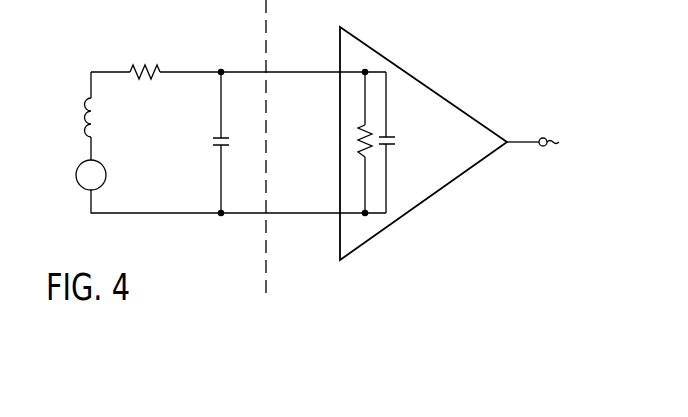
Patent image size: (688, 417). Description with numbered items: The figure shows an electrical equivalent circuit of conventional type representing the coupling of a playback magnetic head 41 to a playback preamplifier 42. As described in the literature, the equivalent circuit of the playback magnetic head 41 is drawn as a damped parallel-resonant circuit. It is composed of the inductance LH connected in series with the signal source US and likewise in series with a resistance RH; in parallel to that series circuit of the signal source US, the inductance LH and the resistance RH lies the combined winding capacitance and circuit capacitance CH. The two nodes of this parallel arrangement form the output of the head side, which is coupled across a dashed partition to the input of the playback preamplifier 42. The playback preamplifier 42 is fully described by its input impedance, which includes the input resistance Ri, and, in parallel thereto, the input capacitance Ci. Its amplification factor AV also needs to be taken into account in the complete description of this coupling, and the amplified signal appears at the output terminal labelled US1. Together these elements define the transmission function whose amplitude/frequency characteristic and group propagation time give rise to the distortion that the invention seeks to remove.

The playback magnetic head 41 is at (198, 207).
The playback preamplifier 42 is at (418, 193).
The resistance RH is at (145, 57).
The inductance LH is at (71, 117).
The signal source US is at (77, 176).
The combined winding capacitance and circuit capacitance CH is at (205, 140).
The input resistance Ri is at (357, 157).
The input capacitance Ci is at (397, 164).
The amplification factor AV is at (462, 142).
The amplifier output voltage US1 is at (569, 146).